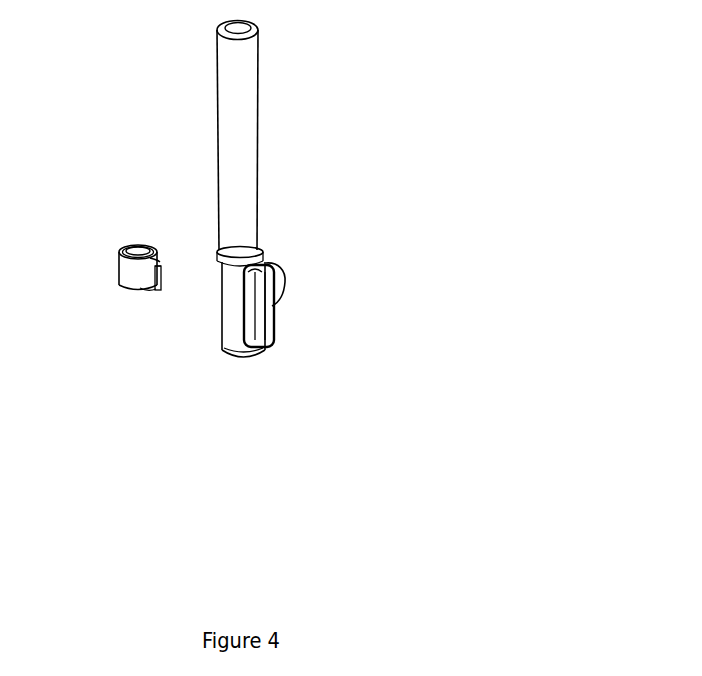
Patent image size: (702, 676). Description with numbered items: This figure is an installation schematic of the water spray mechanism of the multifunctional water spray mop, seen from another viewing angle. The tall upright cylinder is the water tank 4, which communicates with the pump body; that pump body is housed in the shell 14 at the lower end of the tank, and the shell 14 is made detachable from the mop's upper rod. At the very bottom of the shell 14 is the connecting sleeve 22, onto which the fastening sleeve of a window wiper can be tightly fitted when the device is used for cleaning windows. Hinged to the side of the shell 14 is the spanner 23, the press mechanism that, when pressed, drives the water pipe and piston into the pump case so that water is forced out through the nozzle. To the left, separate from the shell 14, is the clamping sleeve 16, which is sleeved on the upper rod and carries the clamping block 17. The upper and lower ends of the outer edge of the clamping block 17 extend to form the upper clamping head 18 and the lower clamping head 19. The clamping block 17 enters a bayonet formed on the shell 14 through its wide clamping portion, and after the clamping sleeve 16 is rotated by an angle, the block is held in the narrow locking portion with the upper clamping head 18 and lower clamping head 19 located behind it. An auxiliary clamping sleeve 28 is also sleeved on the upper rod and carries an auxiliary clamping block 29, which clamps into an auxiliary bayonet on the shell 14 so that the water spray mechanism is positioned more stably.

The water tank 4 is at (245, 173).
The shell 14 is at (272, 325).
The clamping sleeve 16 is at (130, 280).
The clamping block 17 is at (150, 290).
The upper clamping head 18 is at (160, 268).
The lower clamping head 19 is at (158, 288).
The connecting sleeve 22 is at (247, 358).
The spanner 23 is at (278, 305).
The auxiliary clamping sleeve 28 is at (125, 250).
The auxiliary clamping block 29 is at (158, 262).